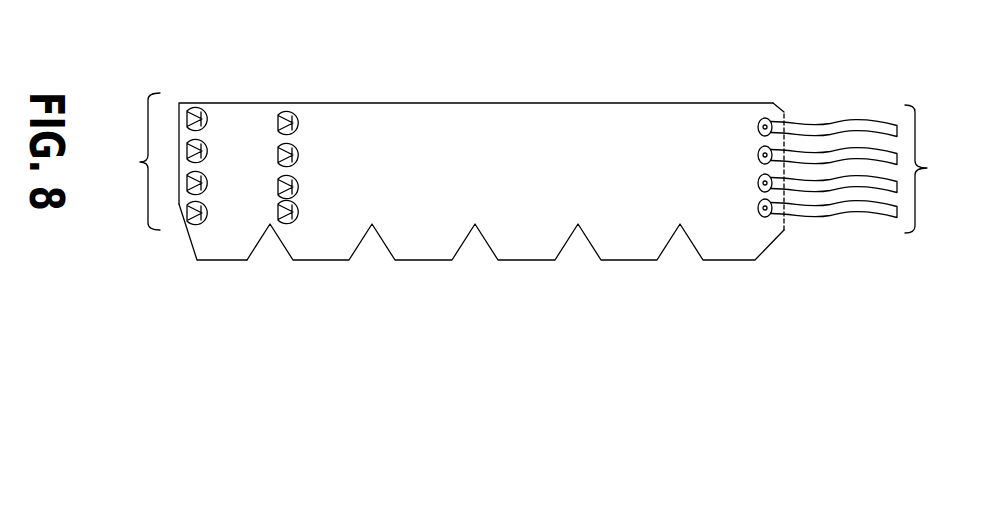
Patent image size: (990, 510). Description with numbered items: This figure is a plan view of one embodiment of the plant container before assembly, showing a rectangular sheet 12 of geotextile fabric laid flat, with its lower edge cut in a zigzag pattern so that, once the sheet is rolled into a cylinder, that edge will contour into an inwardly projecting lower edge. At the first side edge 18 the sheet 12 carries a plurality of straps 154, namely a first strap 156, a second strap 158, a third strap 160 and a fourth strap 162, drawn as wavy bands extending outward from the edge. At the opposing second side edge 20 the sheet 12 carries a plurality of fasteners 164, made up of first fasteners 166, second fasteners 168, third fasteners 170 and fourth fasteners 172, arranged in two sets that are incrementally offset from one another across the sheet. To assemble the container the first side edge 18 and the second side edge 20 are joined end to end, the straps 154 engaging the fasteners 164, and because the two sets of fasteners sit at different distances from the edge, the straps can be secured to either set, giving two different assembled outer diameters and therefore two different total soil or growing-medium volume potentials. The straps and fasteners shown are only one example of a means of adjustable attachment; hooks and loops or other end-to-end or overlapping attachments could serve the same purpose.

The rectangular sheet 12 is at (483, 178).
The first side edge 18 is at (788, 147).
The second side edge 20 is at (178, 204).
The plurality of straps 154 is at (867, 169).
The first strap 156 is at (784, 112).
The second strap 158 is at (832, 149).
The third strap 160 is at (858, 191).
The fourth strap 162 is at (812, 216).
The plurality of fasteners 164 is at (140, 161).
The first fasteners 166 is at (199, 110).
The second fasteners 168 is at (201, 150).
The third fasteners 170 is at (205, 222).
The fourth fasteners 172 is at (198, 225).